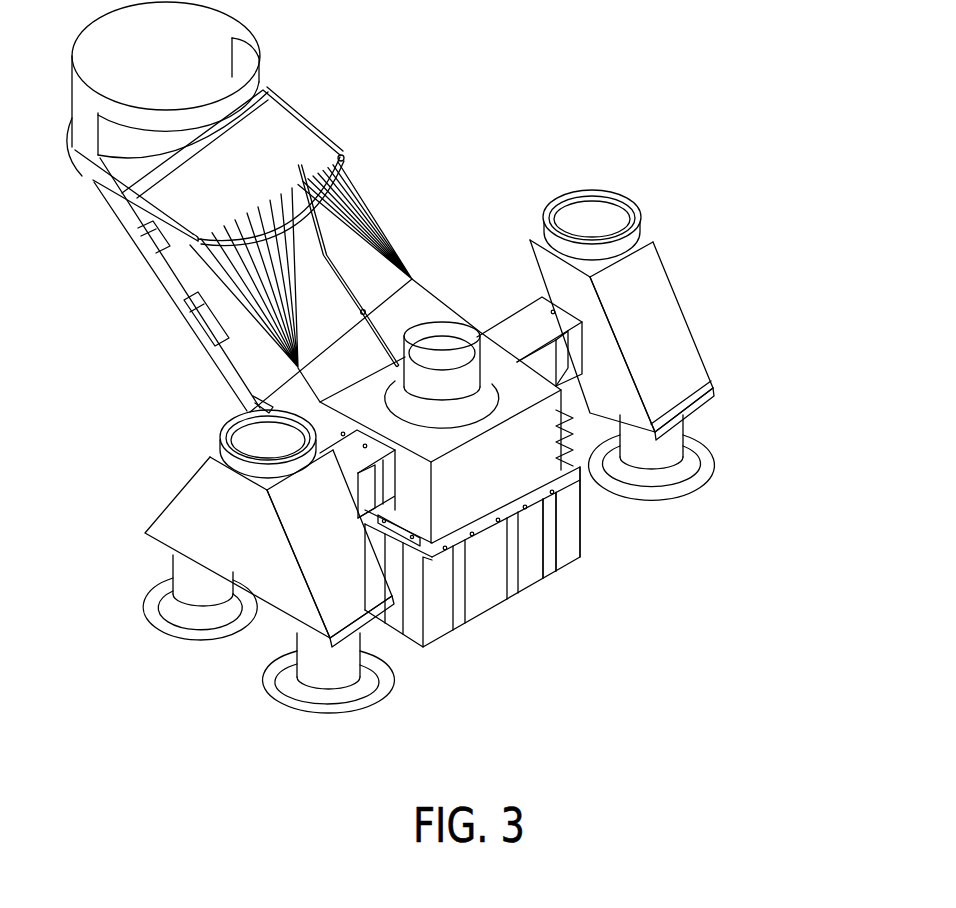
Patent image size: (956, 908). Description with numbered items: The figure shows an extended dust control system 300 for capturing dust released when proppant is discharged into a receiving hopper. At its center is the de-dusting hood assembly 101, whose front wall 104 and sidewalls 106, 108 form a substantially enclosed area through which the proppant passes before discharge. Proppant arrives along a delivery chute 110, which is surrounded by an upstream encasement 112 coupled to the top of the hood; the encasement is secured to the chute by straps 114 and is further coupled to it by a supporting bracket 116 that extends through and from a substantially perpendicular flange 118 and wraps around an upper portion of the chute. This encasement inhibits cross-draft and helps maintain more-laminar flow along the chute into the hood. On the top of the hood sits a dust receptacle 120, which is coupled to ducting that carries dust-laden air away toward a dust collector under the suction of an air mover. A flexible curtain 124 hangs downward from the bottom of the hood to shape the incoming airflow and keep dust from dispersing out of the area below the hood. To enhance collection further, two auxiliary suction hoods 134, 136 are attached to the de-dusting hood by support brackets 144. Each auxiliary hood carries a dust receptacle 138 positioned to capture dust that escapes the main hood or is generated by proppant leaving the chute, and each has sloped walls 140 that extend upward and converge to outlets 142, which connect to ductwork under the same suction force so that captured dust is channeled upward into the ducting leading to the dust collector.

The extended dust control system 300 is at (538, 99).
The de-dusting hood assembly 101 is at (434, 266).
The front wall 104 is at (470, 467).
The sidewall 106 is at (416, 488).
The sidewall 108 is at (583, 480).
The chute 110 is at (130, 228).
The upstream encasement 112 is at (372, 230).
The straps 114 is at (150, 250).
The supporting bracket 116 is at (88, 172).
The flange 118 is at (331, 256).
The dust receptacle 120 is at (444, 325).
The flexible curtain 124 is at (567, 545).
The auxiliary suction hood 134 is at (150, 527).
The auxiliary suction hood 136 is at (678, 292).
The dust receptacle 138 is at (708, 460).
The sloped walls 140 is at (680, 345).
The outlets 142 is at (548, 207).
The support brackets 144 is at (520, 327).